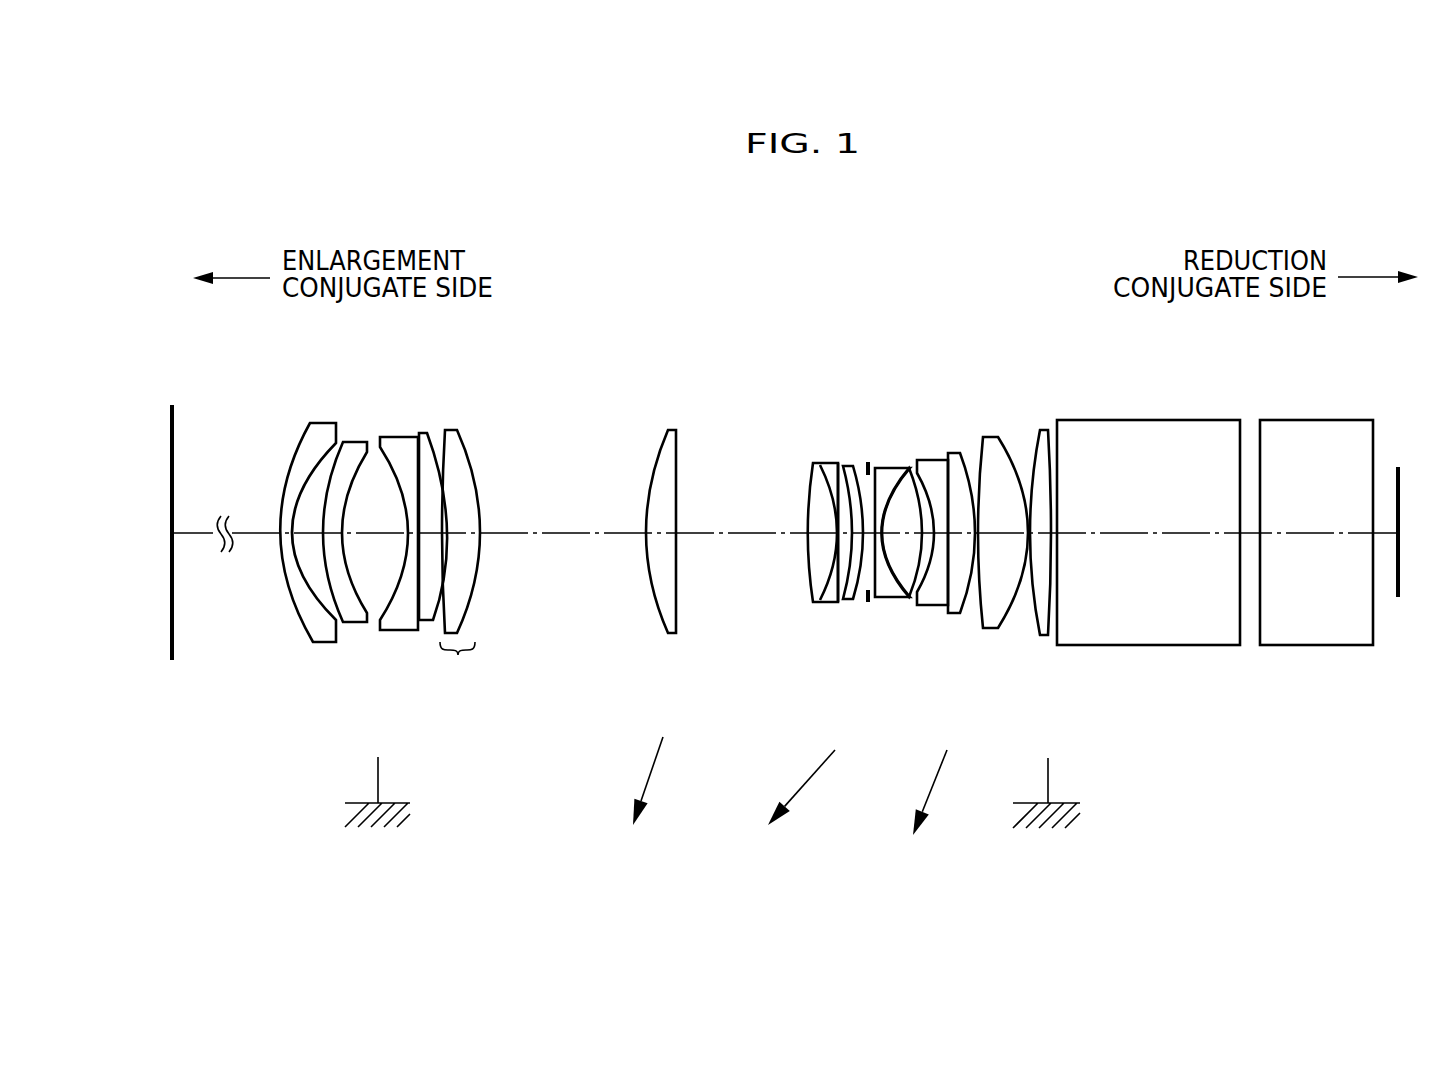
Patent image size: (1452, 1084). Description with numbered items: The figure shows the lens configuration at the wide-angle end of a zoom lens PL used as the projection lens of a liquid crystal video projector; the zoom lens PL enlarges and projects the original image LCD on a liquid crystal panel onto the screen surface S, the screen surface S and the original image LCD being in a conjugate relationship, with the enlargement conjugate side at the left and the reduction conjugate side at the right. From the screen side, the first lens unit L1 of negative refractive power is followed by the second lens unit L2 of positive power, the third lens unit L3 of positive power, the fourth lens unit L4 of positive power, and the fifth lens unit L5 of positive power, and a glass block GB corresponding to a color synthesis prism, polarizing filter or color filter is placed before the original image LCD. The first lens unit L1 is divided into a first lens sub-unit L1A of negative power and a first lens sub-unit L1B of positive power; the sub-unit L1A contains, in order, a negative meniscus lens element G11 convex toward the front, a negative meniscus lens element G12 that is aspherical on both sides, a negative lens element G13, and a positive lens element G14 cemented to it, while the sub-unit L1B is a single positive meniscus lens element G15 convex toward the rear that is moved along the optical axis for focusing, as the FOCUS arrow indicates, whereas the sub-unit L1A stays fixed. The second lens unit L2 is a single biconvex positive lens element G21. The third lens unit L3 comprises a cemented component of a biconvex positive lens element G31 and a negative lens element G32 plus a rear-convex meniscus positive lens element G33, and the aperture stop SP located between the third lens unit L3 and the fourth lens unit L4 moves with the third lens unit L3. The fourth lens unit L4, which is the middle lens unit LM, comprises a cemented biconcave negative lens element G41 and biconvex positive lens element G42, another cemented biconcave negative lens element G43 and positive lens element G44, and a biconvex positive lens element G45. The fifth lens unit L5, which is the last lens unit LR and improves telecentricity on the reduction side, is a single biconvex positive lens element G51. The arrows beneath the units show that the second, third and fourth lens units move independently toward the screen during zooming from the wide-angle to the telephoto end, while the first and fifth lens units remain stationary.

The screen surface S is at (173, 427).
The zoom lens PL is at (1057, 352).
The first lens unit L1 is at (414, 558).
The first lens sub-unit L1A is at (438, 418).
The first lens sub-unit L1B is at (472, 418).
The negative lens element G11 is at (315, 632).
The negative lens element G12 is at (355, 620).
The negative lens element G13 is at (398, 623).
The positive lens element G14 is at (432, 613).
The positive lens element G15 is at (460, 615).
The focusing movement of L1B FOCUS is at (514, 669).
The second lens unit L2 is at (644, 574).
The biconvex positive lens element G21 is at (660, 595).
The third lens unit L3 is at (802, 512).
The positive lens element G31 is at (810, 470).
The negative lens element G32 is at (830, 465).
The positive lens element G33 is at (855, 470).
The aperture stop SP is at (869, 462).
The fourth lens unit L4 is at (951, 549).
The middle lens unit LM is at (951, 549).
The biconcave negative lens element G41 is at (885, 592).
The biconvex positive lens element G42 is at (907, 593).
The biconcave negative lens element G43 is at (927, 463).
The positive lens element G44 is at (963, 463).
The biconvex positive lens element G45 is at (997, 455).
The fifth lens unit L5 is at (1048, 563).
The last lens unit LR is at (1048, 563).
The biconvex positive lens element G51 is at (1036, 448).
The glass block GB is at (1298, 433).
The original image LCD is at (1400, 565).